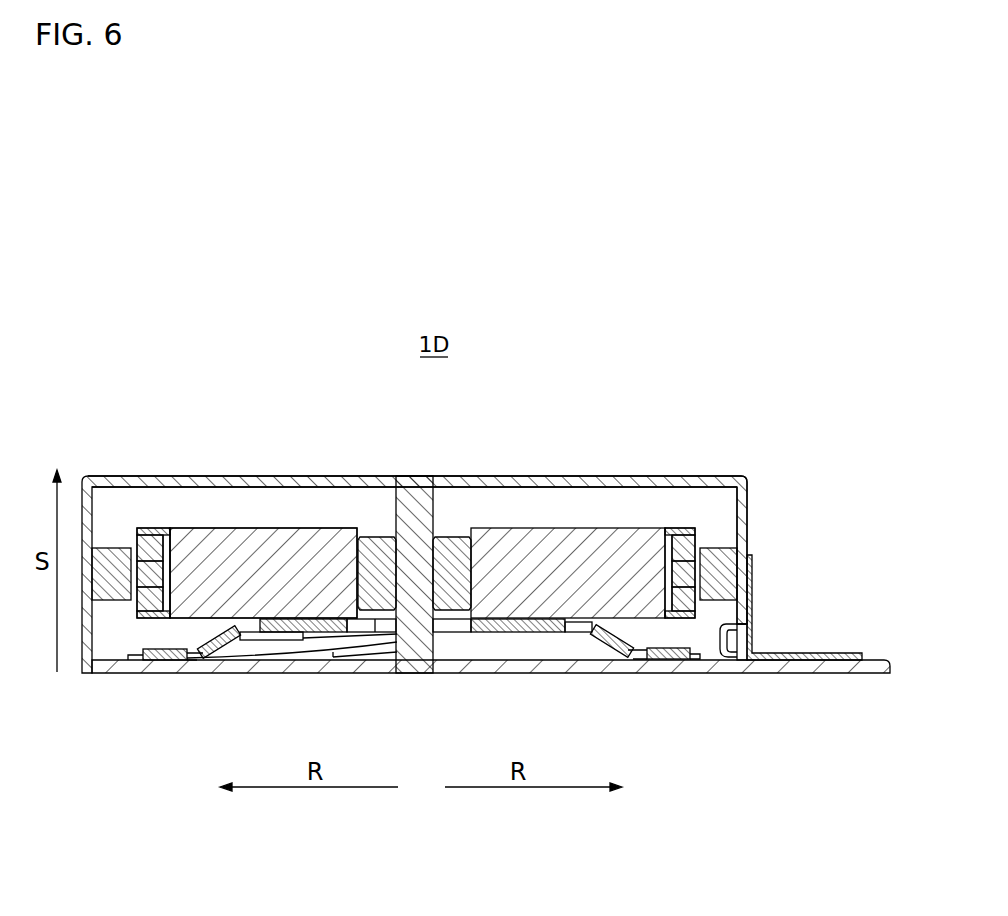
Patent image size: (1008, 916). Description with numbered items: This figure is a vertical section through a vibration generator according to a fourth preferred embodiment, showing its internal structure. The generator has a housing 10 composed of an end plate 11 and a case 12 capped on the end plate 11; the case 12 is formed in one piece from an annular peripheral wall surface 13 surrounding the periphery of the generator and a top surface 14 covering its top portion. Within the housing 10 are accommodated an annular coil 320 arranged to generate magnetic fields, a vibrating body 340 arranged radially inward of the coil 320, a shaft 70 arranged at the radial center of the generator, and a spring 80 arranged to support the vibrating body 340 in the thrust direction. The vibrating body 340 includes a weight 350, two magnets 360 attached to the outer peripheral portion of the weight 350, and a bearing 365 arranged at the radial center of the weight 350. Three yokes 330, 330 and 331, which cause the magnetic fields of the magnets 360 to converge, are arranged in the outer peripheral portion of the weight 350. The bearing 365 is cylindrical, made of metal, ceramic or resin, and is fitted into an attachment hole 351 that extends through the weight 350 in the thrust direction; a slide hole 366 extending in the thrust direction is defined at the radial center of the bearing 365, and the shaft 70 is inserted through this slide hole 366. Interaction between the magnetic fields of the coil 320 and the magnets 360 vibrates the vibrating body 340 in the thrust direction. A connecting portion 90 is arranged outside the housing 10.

The housing 10 is at (608, 476).
The end plate 11 is at (212, 673).
The case 12 is at (548, 476).
The annular peripheral wall surface 13 is at (748, 488).
The top surface 14 is at (472, 477).
The shaft 70 is at (425, 476).
The spring 80 is at (573, 650).
The connecting portion 90 is at (803, 655).
The annular coil 320 is at (720, 548).
The yoke 330 is at (158, 528).
The yoke 331 is at (116, 548).
The vibrating body 340 is at (240, 528).
The weight 350 is at (295, 528).
The attachment hole 351 is at (458, 585).
The magnet 360 is at (695, 545).
The bearing 365 is at (380, 537).
The slide hole 366 is at (398, 578).